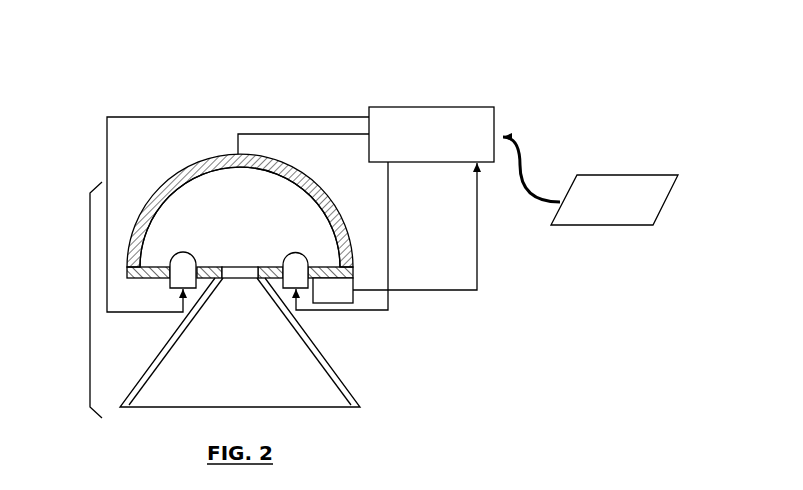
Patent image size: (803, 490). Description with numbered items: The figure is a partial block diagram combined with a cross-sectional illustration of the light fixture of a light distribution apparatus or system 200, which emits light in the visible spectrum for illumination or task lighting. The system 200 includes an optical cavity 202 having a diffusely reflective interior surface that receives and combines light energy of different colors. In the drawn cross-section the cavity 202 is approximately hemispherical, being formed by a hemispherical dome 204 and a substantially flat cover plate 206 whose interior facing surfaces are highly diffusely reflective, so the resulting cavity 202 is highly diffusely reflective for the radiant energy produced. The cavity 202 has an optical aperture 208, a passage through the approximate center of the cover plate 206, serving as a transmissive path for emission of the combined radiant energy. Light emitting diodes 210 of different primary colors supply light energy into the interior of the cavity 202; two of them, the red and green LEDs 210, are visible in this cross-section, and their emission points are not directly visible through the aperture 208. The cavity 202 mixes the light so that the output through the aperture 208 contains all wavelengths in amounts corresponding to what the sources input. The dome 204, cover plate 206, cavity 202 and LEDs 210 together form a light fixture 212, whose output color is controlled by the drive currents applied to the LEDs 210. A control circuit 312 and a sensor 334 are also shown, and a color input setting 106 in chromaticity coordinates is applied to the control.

The light distribution system 200 is at (157, 78).
The light fixture 212 is at (219, 280).
The hemispherical dome 204 is at (175, 175).
The optical cavity 202 is at (240, 217).
The cover plate 206 is at (142, 282).
The optical aperture 208 is at (241, 264).
The light emitting diodes 210 is at (182, 252).
The sensor 334 is at (349, 305).
The control circuit 312 is at (477, 105).
The color input setting 106 is at (595, 173).